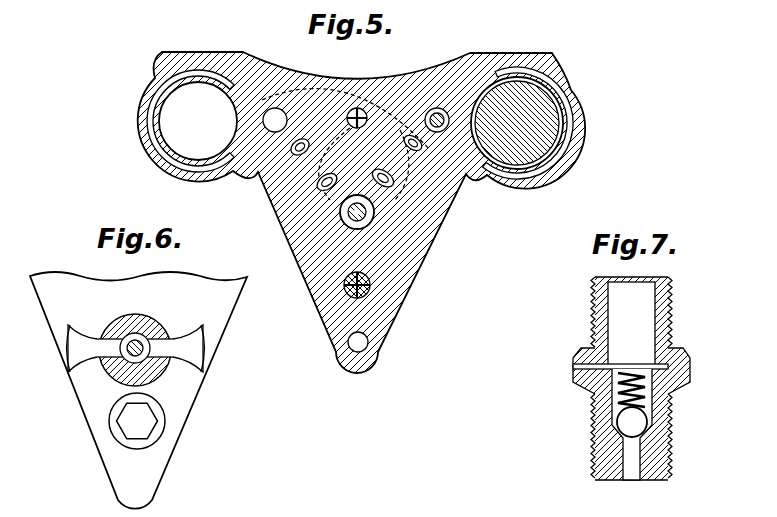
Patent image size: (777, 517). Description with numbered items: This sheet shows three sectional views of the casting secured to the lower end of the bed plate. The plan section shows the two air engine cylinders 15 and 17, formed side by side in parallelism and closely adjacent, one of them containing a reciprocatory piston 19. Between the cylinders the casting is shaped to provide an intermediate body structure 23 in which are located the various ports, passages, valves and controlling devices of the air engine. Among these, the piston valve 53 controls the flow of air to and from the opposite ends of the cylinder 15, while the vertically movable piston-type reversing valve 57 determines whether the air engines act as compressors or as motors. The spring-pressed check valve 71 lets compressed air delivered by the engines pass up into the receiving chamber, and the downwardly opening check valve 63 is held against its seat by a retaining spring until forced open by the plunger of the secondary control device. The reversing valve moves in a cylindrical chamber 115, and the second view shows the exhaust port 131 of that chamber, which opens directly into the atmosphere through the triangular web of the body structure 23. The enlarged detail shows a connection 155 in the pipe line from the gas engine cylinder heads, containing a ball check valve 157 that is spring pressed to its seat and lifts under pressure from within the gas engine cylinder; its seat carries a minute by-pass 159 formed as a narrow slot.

In FIG. 5, the air engine cylinder 15 is at (572, 146).
In FIG. 5, the air engine cylinder 17 is at (152, 86).
In FIG. 5, the reciprocatory piston 19 is at (563, 112).
In FIG. 5, the intermediate body structure 23 is at (430, 213).
In FIG. 6, the intermediate body structure 23 is at (85, 386).
In FIG. 5, the piston valve 53 is at (437, 108).
In FIG. 5, the reversing valve 57 is at (363, 222).
In FIG. 6, the reversing valve 57 is at (142, 352).
In FIG. 5, the check valve 63 is at (357, 107).
In FIG. 5, the check valve 71 is at (362, 288).
In FIG. 5, the cylindrical chamber 115 is at (360, 226).
In FIG. 6, the exhaust port 131 is at (180, 338).
In FIG. 7, the connection 155 is at (669, 413).
In FIG. 7, the ball check valve 157 is at (620, 419).
In FIG. 7, the by-pass 159 is at (647, 432).